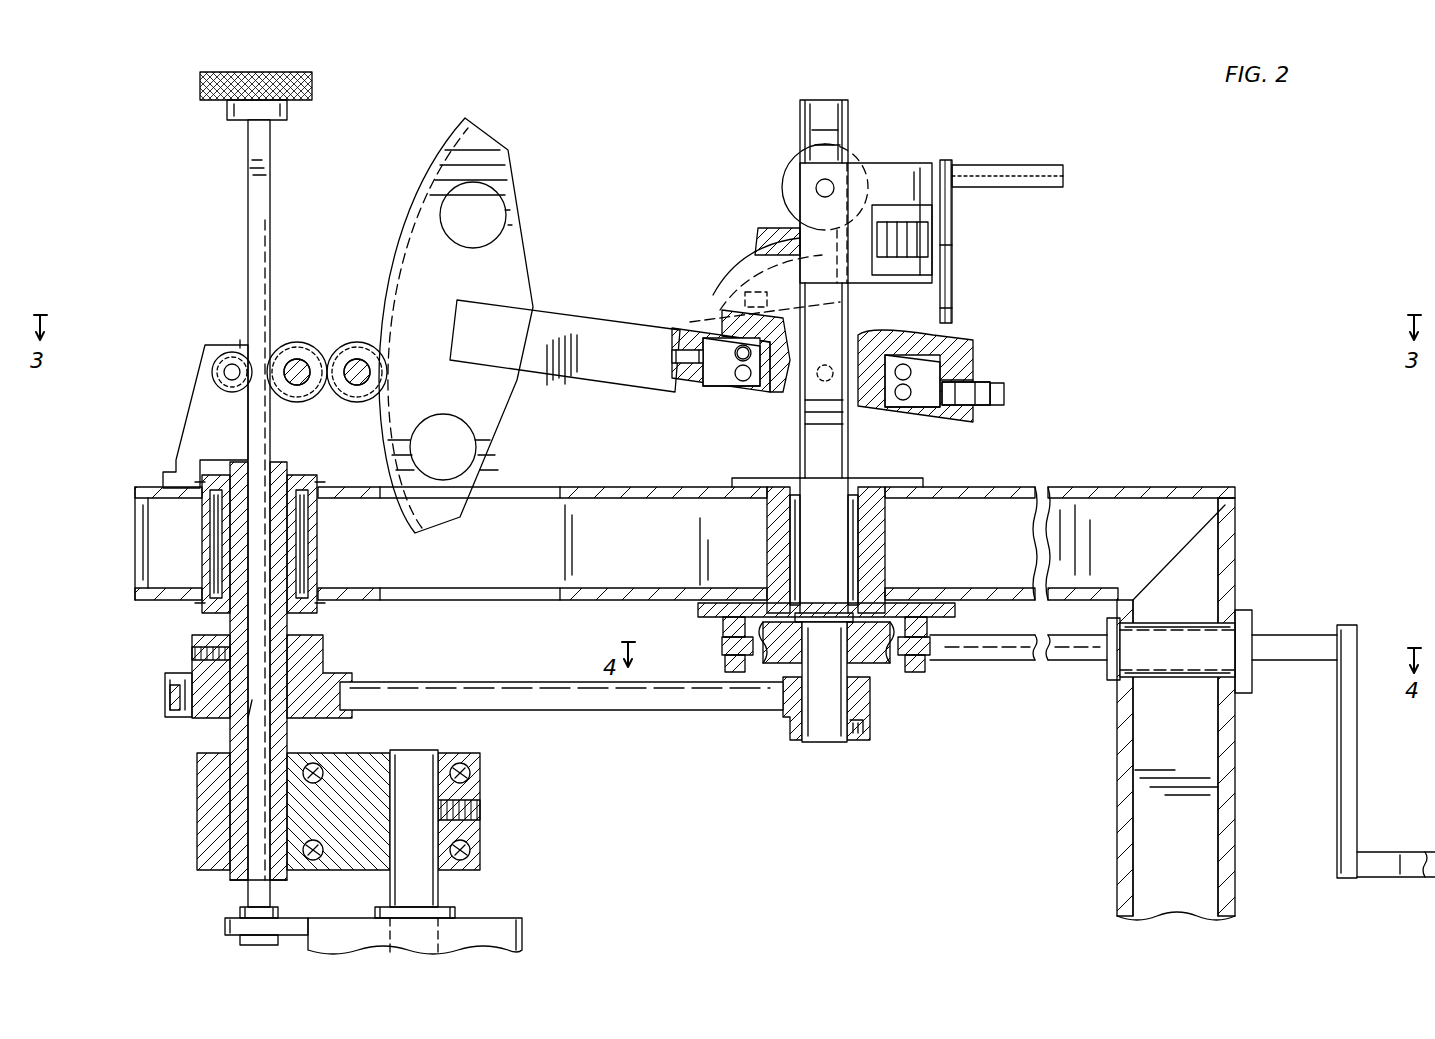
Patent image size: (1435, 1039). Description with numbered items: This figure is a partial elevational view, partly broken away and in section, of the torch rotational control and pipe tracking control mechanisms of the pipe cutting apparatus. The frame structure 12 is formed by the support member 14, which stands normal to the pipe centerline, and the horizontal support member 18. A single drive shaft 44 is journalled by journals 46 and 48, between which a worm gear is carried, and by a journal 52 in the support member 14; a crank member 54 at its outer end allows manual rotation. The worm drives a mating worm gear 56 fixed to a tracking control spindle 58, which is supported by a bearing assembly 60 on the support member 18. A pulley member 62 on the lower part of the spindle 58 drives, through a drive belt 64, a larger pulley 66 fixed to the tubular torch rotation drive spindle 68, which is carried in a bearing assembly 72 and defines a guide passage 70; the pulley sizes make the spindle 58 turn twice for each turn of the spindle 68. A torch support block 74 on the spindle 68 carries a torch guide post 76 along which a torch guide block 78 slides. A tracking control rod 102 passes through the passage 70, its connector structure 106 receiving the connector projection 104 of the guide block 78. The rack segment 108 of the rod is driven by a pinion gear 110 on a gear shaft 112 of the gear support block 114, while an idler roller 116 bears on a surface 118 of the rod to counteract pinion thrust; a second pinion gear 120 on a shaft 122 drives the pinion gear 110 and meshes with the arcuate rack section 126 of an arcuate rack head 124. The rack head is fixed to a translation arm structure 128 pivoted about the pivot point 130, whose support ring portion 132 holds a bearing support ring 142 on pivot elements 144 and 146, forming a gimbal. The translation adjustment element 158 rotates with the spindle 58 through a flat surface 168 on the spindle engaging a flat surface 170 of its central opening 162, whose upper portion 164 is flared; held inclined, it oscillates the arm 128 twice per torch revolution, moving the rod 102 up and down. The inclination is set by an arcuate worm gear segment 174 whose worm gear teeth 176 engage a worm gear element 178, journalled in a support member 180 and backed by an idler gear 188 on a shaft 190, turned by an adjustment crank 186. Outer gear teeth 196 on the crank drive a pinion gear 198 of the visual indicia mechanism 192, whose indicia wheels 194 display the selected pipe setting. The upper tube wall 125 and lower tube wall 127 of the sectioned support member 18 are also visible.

The frame structure 12 is at (1233, 490).
The support member 14 is at (1117, 850).
The support member 18 is at (600, 490).
The drive shaft 44 is at (1072, 660).
The journal 46 is at (920, 660).
The journal 48 is at (722, 655).
The journal 52 is at (1200, 628).
The crank member 54 is at (1342, 735).
The worm gear 56 is at (860, 663).
The tracking control spindle 58 is at (825, 745).
The bearing assembly 60 is at (915, 487).
The pulley member 62 is at (783, 730).
The drive belt 64 is at (612, 710).
The pulley 66 is at (180, 715).
The torch rotation drive spindle 68 is at (238, 875).
The guide passage 70 is at (248, 725).
The bearing assembly 72 is at (215, 475).
The torch support block 74 is at (197, 818).
The torch guide post 76 is at (438, 895).
The torch guide block 78 is at (522, 938).
The tracking control rod 102 is at (248, 147).
The connector projection 104 is at (225, 936).
The connector structure 106 is at (278, 912).
The rack segment 108 is at (270, 240).
The pinion gear 110 is at (293, 342).
The gear shaft 112 is at (297, 385).
The gear support block 114 is at (200, 403).
The idler roller 116 is at (212, 372).
The surface 118 is at (248, 345).
The second pinion gear 120 is at (352, 342).
The shaft 122 is at (355, 385).
The arcuate rack head 124 is at (510, 250).
The tube upper wall opening 125 is at (560, 498).
The arcuate rack section 126 is at (432, 180).
The tube lower wall 127 is at (548, 588).
The translation arm structure 128 is at (592, 328).
The pivot point 130 is at (818, 380).
The support ring portion 132 is at (1004, 388).
The bearing support ring 142 is at (738, 380).
The pivot element 144 is at (672, 372).
The pivot element 146 is at (1000, 405).
The translation adjustment element 158 is at (855, 335).
The central opening 162 is at (870, 400).
The upper portion 164 is at (950, 337).
The flat surface 168 is at (807, 108).
The flat surface 170 is at (975, 355).
The arcuate worm gear segment 174 is at (722, 290).
The worm gear teeth 176 is at (740, 265).
The worm gear element 178 is at (760, 228).
The support member 180 is at (905, 170).
The adjustment crank 186 is at (948, 160).
The idler gear 188 is at (790, 170).
The shaft 190 is at (830, 185).
The visual indicia mechanism 192 is at (925, 268).
The indicia wheels 194 is at (900, 224).
The outer gear teeth 196 is at (952, 310).
The pinion gear 198 is at (955, 245).